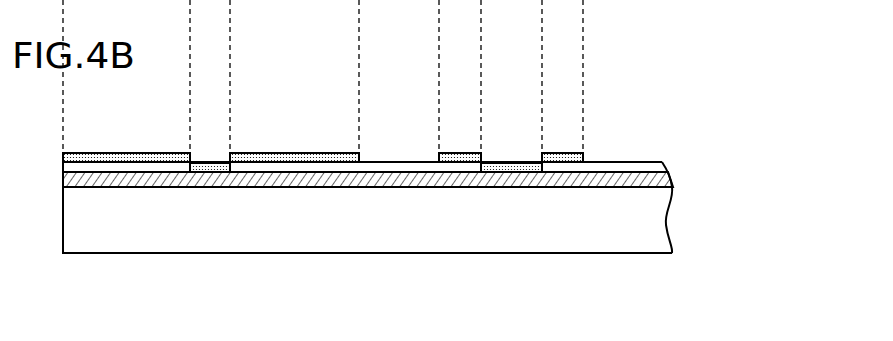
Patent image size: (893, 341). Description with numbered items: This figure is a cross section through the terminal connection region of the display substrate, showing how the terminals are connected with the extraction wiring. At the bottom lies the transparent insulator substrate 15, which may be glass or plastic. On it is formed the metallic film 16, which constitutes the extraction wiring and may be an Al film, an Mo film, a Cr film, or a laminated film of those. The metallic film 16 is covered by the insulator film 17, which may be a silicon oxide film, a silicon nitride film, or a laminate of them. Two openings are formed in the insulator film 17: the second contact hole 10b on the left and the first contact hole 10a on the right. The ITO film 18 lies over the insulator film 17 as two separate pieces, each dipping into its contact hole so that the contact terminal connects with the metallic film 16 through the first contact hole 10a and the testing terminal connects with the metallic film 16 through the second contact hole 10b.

The first contact hole 10a is at (517, 148).
The second contact hole 10b is at (213, 148).
The transparent insulator substrate 15 is at (388, 238).
The metallic film 16 is at (675, 190).
The insulator film 17 is at (662, 163).
The ITO film 18 is at (583, 155).